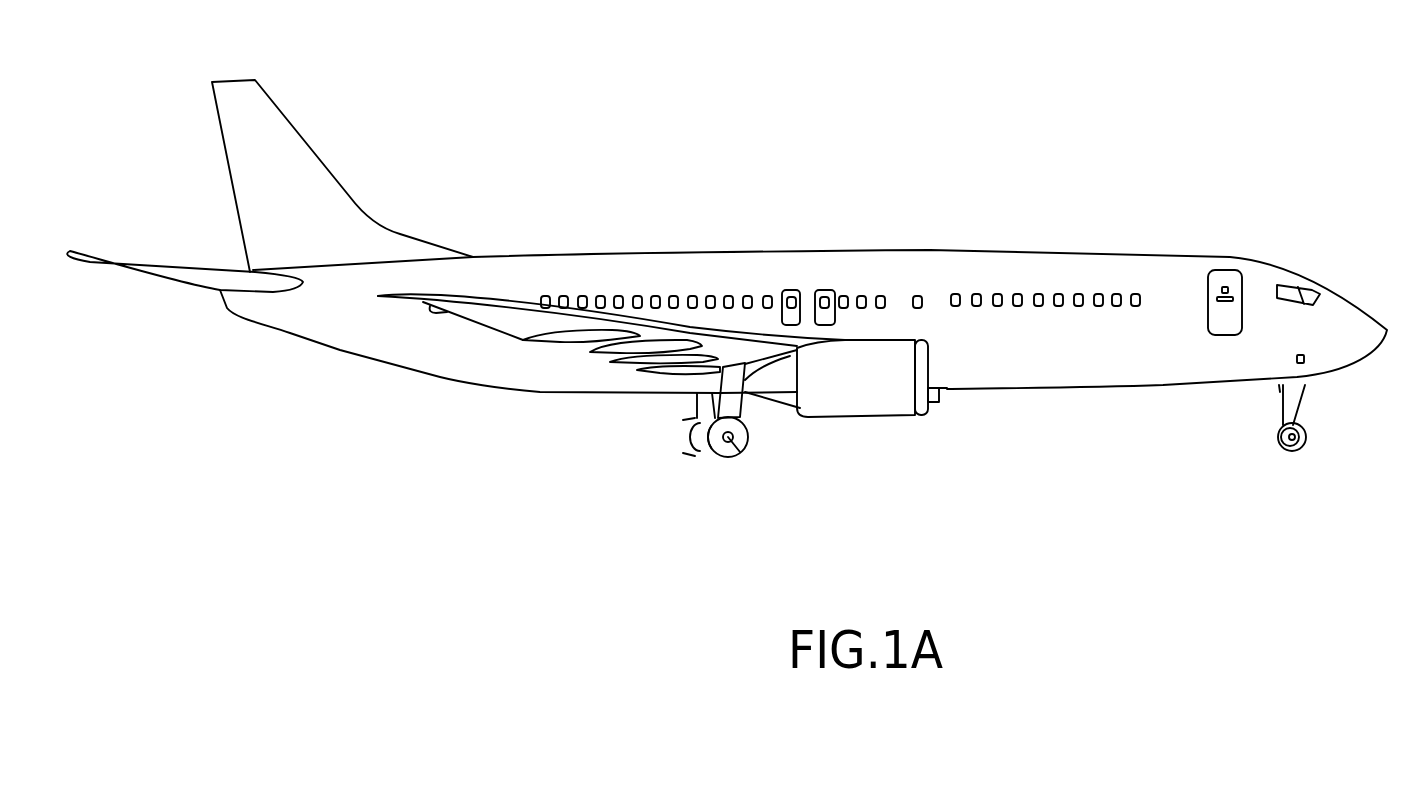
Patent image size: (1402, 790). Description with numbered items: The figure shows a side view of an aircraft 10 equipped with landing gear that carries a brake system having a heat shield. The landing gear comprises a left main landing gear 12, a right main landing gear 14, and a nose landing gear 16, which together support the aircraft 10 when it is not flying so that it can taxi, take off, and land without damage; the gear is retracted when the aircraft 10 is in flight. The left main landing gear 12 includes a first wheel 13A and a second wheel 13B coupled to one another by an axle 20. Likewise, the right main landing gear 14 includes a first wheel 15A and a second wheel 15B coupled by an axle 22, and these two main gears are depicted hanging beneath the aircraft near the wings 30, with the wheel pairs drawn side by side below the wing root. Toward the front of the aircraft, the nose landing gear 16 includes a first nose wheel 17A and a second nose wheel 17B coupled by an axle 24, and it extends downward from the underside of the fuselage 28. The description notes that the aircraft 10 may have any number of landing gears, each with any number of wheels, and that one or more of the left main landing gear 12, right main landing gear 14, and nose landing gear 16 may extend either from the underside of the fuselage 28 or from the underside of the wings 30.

The aircraft 10 is at (921, 143).
The left main landing gear 12 is at (668, 406).
The first wheel 13A is at (683, 420).
The second wheel 13B is at (683, 453).
The right main landing gear 14 is at (716, 466).
The first wheel 15A is at (747, 434).
The second wheel 15B is at (703, 460).
The nose landing gear 16 is at (1289, 445).
The first nose wheel 17A is at (1277, 442).
The second nose wheel 17B is at (1306, 440).
The axle 20 is at (680, 447).
The axle 22 is at (737, 458).
The axle 24 is at (1297, 449).
The fuselage 28 is at (1279, 385).
The wings 30 is at (790, 358).